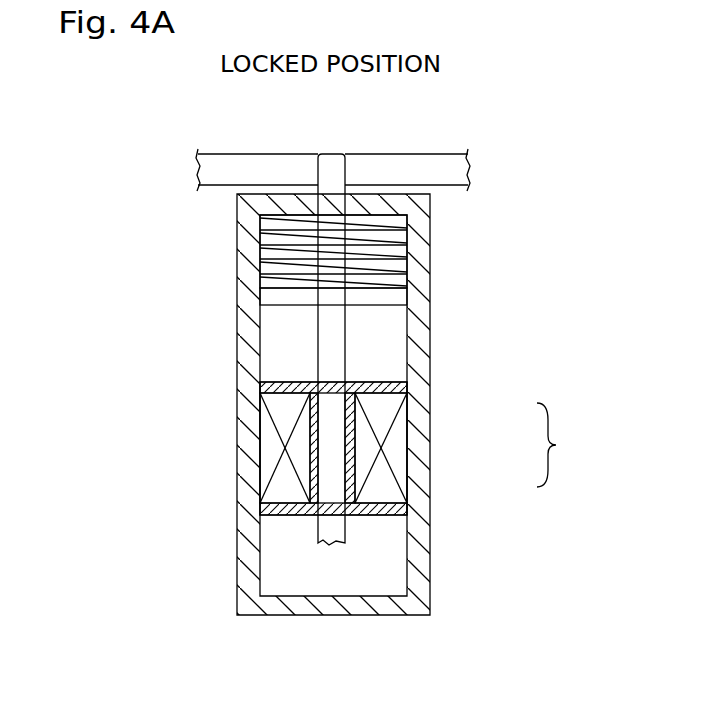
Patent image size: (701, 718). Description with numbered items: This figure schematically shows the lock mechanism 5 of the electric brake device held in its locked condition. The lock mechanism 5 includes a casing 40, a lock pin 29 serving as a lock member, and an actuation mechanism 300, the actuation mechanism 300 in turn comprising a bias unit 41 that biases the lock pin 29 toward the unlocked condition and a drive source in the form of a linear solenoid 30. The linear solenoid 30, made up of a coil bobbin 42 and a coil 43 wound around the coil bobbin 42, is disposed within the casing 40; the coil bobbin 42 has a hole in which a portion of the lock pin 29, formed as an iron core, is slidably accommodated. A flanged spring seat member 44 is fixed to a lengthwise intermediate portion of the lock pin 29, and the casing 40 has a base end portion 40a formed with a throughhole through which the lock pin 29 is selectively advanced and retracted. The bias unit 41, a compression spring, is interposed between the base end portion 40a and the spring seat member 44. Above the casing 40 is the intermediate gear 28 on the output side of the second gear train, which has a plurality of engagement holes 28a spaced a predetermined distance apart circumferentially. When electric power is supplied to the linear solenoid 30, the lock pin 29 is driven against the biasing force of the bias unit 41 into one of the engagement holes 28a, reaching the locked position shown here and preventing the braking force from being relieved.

The lock mechanism 5 is at (444, 541).
The intermediate gear 28 is at (403, 165).
The engagement holes 28a is at (322, 150).
The lock pin 29 is at (333, 172).
The linear solenoid 30 is at (312, 415).
The casing 40 is at (253, 553).
The base end portion 40a is at (302, 198).
The bias unit 41 is at (358, 284).
The coil bobbin 42 is at (285, 380).
The coil 43 is at (270, 448).
The spring seat member 44 is at (393, 298).
The actuation mechanism 300 is at (572, 445).